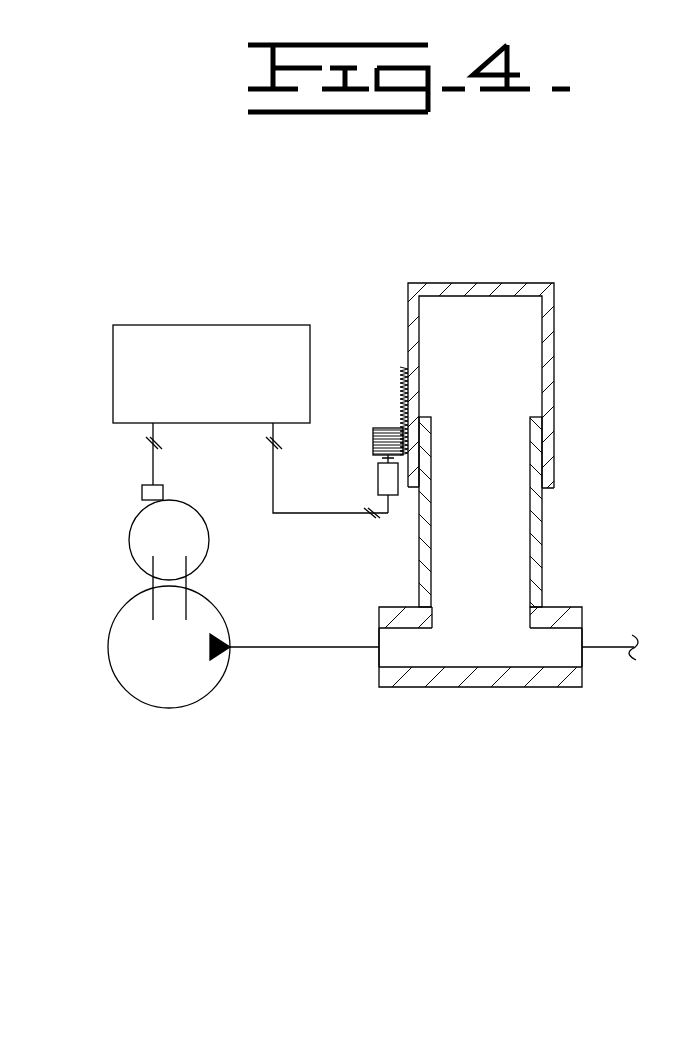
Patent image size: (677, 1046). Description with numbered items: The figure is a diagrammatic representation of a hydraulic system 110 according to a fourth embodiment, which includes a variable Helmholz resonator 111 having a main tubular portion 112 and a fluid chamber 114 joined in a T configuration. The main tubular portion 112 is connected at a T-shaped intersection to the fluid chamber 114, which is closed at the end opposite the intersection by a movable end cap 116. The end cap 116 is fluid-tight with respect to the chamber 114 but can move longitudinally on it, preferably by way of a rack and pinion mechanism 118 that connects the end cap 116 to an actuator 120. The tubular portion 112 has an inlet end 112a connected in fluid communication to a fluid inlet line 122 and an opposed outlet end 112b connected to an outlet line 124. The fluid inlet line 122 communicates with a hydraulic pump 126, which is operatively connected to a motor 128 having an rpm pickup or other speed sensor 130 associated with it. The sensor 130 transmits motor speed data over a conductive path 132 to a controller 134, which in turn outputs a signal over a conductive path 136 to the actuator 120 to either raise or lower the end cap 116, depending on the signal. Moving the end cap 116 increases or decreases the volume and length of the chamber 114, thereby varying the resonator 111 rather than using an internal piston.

The hydraulic system 110 is at (390, 232).
The variable Helmholz resonator 111 is at (403, 555).
The main tubular portion 112 is at (482, 690).
The inlet end 112a is at (378, 672).
The outlet end 112b is at (584, 680).
The fluid chamber 114 is at (510, 523).
The movable end cap 116 is at (555, 343).
The rack and pinion mechanism 118 is at (397, 360).
The actuator 120 is at (378, 478).
The fluid inlet line 122 is at (342, 645).
The outlet line 124 is at (614, 647).
The hydraulic pump 126 is at (153, 688).
The motor 128 is at (198, 528).
The speed sensor 130 is at (148, 495).
The conductive path 132 is at (153, 465).
The controller 134 is at (182, 337).
The conductive path 136 is at (273, 472).